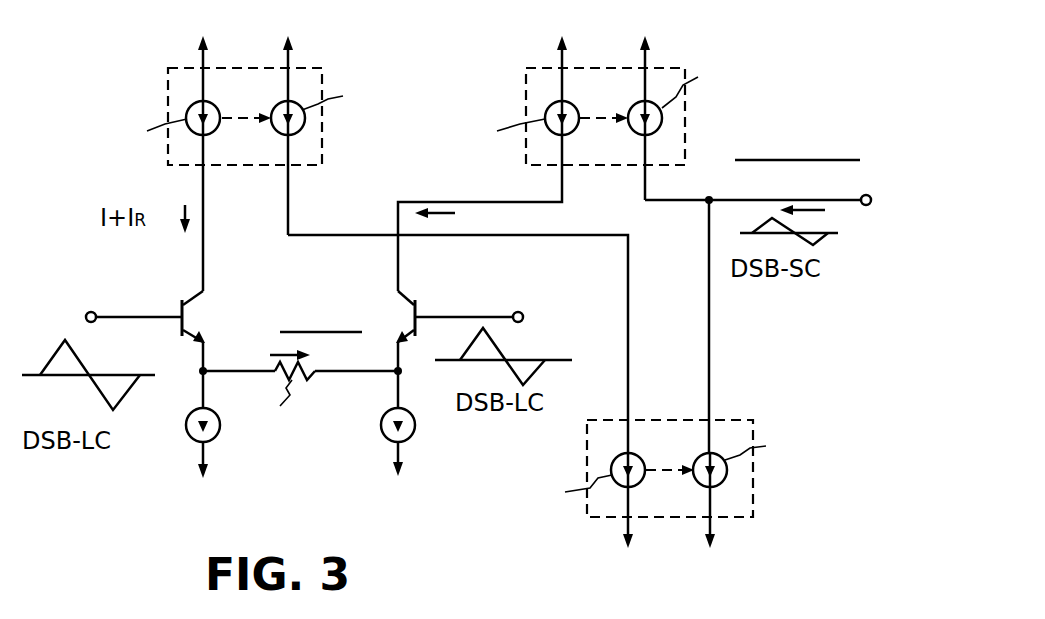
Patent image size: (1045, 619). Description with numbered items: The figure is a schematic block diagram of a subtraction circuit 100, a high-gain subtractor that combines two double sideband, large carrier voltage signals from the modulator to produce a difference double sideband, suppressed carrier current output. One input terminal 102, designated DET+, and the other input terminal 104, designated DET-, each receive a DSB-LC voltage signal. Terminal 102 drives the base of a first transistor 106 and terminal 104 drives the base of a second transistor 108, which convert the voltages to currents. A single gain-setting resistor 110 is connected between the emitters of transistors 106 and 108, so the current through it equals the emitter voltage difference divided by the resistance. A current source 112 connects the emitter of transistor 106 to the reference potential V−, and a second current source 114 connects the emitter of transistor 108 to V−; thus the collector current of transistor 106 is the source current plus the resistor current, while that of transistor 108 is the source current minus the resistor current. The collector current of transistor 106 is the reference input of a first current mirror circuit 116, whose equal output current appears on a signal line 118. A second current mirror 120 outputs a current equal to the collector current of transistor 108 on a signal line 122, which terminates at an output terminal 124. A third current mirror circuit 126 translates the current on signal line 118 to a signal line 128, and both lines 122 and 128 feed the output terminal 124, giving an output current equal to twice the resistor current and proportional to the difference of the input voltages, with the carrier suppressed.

The subtraction circuit 100 is at (824, 32).
The input terminal 102 is at (100, 290).
The input terminal 104 is at (502, 290).
The first transistor 106 is at (166, 327).
The second transistor 108 is at (433, 327).
The resistor 110 is at (297, 365).
The current source 112 is at (181, 459).
The second current source 114 is at (436, 459).
The first current mirror circuit 116 is at (248, 149).
The signal line 118 is at (458, 316).
The second current mirror 120 is at (629, 149).
The signal line 122 is at (753, 228).
The output terminal 124 is at (873, 228).
The third current mirror circuit 126 is at (670, 476).
The signal line 128 is at (749, 326).